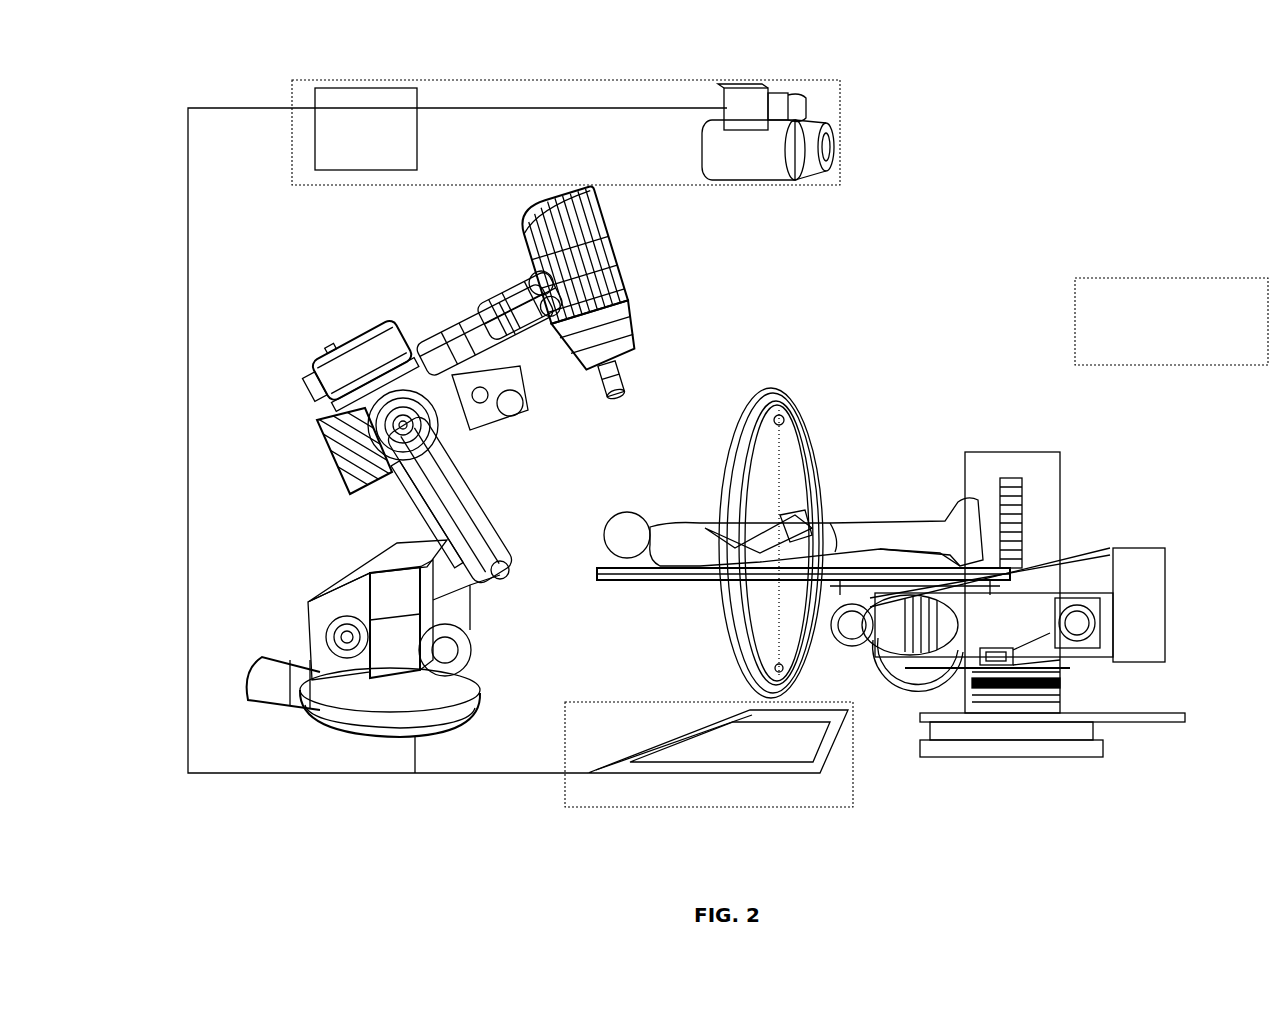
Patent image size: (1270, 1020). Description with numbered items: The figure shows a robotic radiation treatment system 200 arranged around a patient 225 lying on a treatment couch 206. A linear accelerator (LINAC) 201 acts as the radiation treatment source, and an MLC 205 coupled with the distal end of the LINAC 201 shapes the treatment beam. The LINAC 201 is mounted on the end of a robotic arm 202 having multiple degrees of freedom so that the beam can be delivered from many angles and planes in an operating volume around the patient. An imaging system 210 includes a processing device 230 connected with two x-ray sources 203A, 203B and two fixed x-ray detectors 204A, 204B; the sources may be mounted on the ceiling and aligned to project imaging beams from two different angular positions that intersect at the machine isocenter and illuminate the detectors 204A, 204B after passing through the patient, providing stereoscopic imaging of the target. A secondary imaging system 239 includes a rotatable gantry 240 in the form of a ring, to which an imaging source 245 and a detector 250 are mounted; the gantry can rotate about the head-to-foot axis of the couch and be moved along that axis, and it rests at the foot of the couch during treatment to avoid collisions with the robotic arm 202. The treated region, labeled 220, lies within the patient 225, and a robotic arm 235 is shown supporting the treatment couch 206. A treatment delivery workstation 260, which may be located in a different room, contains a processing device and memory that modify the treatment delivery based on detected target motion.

The robotic radiation treatment system 200 is at (243, 46).
The linear accelerator (LINAC) 201 is at (642, 268).
The robotic arm 202 is at (336, 340).
The x-ray source 203A is at (782, 190).
The x-ray source 203B is at (830, 143).
The x-ray detector 204A is at (848, 722).
The x-ray detector 204B is at (745, 768).
The MLC 205 is at (637, 385).
The treatment couch 206 is at (580, 580).
The imaging system 210 is at (843, 108).
The target region 220 is at (803, 520).
The patient 225 is at (617, 520).
The processing device 230 is at (352, 161).
The robotic arm 235 is at (1105, 548).
The secondary imaging system 239 is at (893, 398).
The rotatable gantry 240 is at (737, 432).
The imaging source 245 is at (783, 418).
The detector 250 is at (786, 670).
The treatment delivery workstation 260 is at (1244, 341).